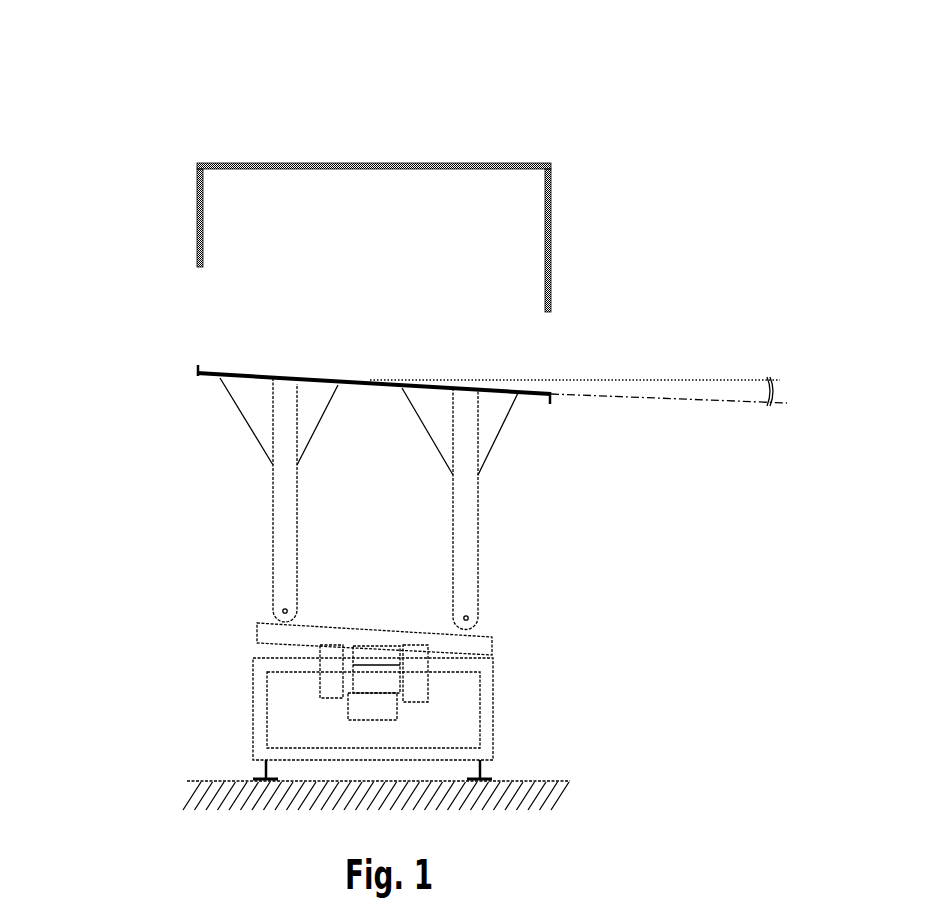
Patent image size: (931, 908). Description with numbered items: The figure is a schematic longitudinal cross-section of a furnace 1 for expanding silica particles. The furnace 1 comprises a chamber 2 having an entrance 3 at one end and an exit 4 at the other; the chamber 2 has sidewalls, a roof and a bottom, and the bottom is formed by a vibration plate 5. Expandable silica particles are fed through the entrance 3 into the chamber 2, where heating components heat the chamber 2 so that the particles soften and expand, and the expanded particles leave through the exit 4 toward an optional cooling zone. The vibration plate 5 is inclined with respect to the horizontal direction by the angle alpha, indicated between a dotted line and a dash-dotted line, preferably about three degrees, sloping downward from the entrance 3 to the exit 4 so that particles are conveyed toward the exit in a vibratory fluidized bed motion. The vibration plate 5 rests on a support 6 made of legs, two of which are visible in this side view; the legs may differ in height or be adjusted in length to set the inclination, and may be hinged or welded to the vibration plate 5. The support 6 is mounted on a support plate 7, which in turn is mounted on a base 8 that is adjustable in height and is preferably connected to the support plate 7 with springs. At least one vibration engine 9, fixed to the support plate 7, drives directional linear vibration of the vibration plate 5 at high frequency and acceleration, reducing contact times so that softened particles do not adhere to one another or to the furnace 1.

The furnace 1 is at (436, 409).
The chamber 2 is at (374, 196).
The entrance 3 is at (181, 251).
The exit 4 is at (560, 295).
The vibration plate 5 is at (193, 390).
The support 6 is at (395, 504).
The support plate 7 is at (508, 649).
The base 8 is at (235, 717).
The vibration engine 9 is at (411, 716).